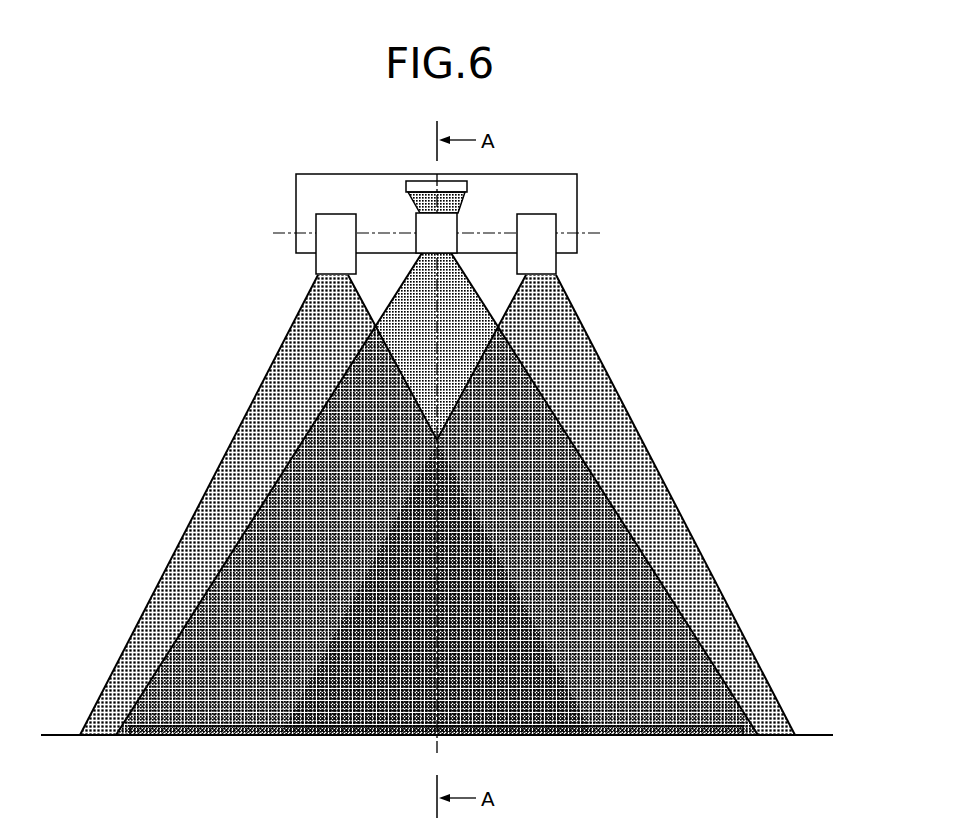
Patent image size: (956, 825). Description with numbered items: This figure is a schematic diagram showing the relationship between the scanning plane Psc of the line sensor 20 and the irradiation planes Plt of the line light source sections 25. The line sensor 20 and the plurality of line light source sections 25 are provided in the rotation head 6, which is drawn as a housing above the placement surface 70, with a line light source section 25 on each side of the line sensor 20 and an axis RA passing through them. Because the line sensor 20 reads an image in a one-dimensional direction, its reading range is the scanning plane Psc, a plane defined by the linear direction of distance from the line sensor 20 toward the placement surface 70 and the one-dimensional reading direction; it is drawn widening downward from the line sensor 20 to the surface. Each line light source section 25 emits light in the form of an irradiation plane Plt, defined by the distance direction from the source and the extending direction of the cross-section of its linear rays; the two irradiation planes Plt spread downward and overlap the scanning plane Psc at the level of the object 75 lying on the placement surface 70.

The rotation head 6 is at (535, 166).
The line sensor 20 is at (412, 172).
The line light source sections 25 is at (308, 255).
The placement surface 70 is at (805, 725).
The sheet / recording medium 75 is at (708, 716).
The reference axis RA is at (273, 225).
The irradiation plane Plt is at (258, 377).
The scanning plane Psc is at (527, 377).